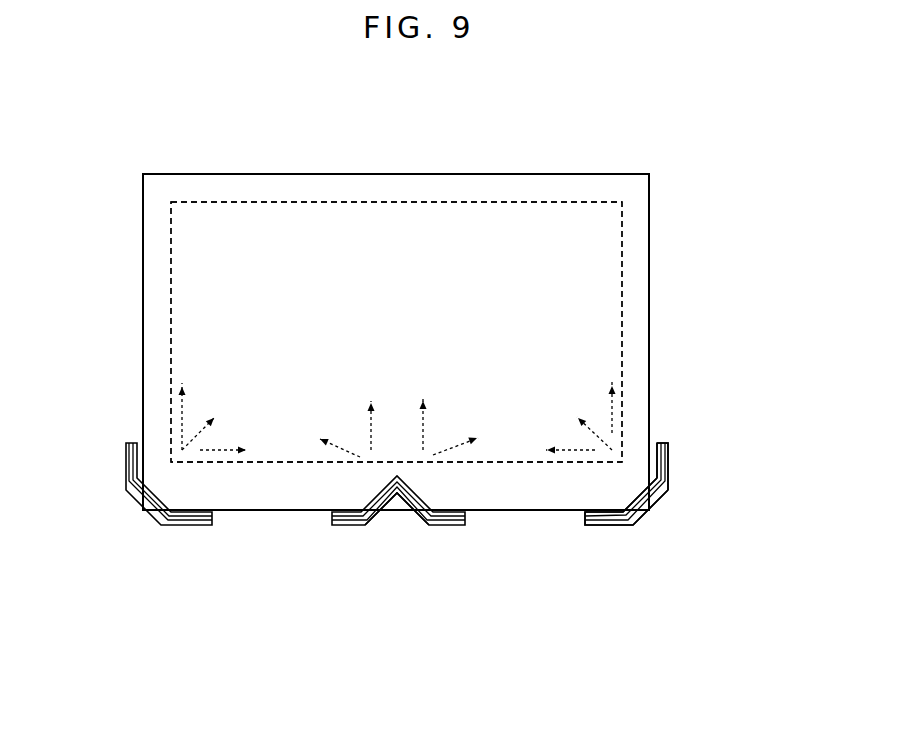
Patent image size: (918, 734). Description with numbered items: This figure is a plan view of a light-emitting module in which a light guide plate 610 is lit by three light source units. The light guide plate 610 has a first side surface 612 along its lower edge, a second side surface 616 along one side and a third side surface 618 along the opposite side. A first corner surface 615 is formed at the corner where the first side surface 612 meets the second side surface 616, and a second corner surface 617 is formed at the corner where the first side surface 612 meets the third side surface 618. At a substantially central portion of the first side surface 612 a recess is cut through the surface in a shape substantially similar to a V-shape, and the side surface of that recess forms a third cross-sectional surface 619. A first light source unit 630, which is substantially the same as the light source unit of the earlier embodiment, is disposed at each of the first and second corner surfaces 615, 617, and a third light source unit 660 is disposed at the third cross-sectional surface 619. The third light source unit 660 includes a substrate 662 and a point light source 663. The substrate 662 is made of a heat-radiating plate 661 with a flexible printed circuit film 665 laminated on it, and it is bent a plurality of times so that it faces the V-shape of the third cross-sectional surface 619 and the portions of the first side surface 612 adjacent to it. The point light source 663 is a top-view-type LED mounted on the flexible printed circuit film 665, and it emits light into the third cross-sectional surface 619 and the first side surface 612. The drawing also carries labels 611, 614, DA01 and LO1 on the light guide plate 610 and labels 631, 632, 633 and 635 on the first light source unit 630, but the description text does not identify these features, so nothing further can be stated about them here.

The light guide plate 610 is at (132, 222).
The display panel 611 is at (517, 220).
The first side surface 612 is at (249, 512).
The top portion of frame 614 is at (390, 173).
The first corner surface 615 is at (156, 494).
The second side surface 616 is at (143, 335).
The second corner surface 617 is at (642, 494).
The third side surface 618 is at (650, 328).
The third cross-sectional surface 619 is at (386, 484).
The first light source unit 630 is at (710, 482).
The first layer 631 is at (660, 497).
The layer stack 632 is at (685, 484).
The vertical support bar 633 is at (668, 452).
The second layer 635 is at (664, 478).
The third light source unit 660 is at (408, 561).
The heat-radiating plate 661 is at (403, 494).
The substrate 662 is at (408, 544).
The point light source 663 is at (397, 497).
The flexible printed circuit film 665 is at (437, 509).
The display area DA01 is at (622, 248).
The light output direction LO1 is at (186, 407).